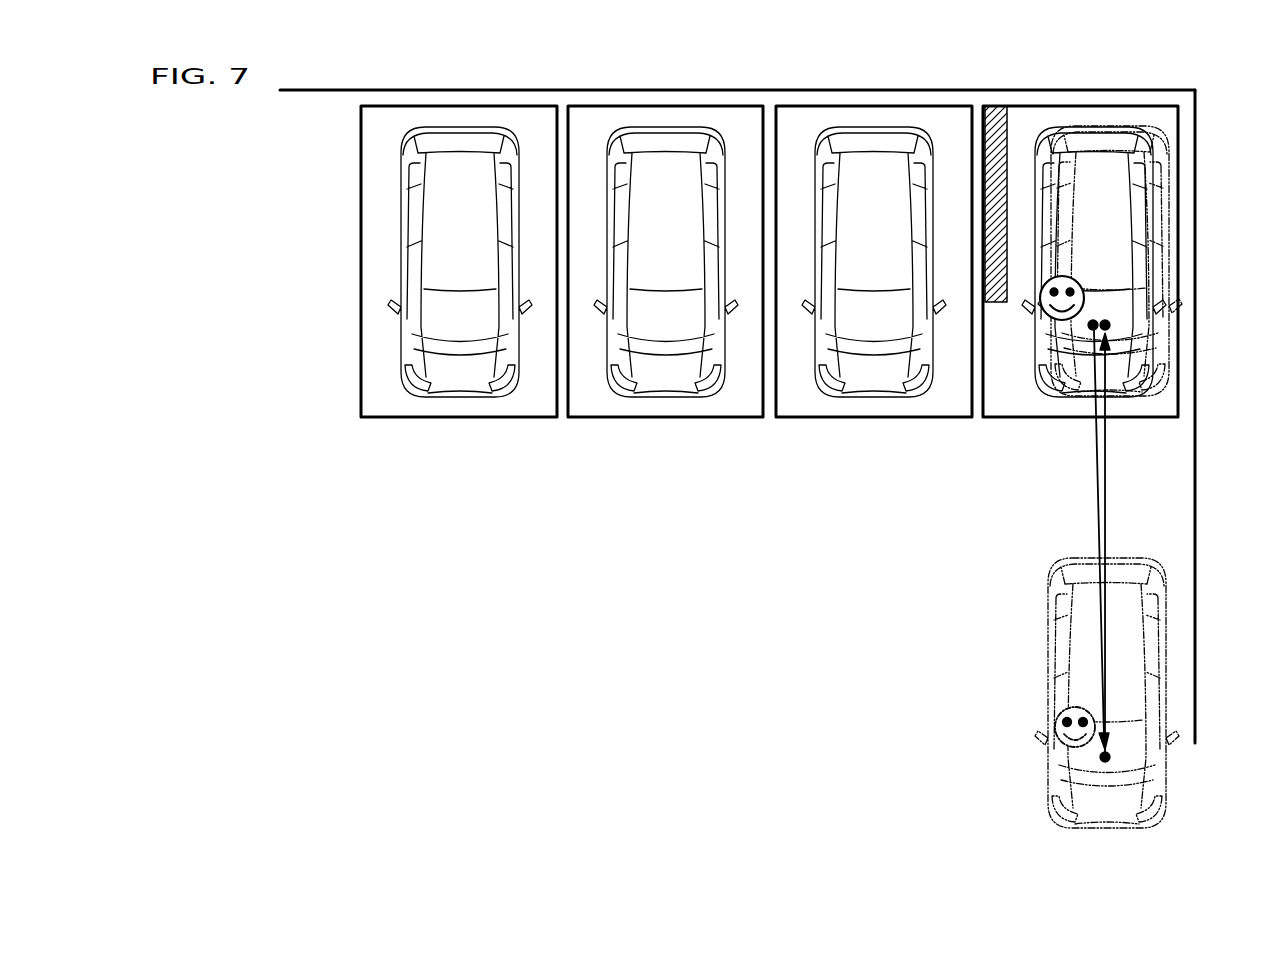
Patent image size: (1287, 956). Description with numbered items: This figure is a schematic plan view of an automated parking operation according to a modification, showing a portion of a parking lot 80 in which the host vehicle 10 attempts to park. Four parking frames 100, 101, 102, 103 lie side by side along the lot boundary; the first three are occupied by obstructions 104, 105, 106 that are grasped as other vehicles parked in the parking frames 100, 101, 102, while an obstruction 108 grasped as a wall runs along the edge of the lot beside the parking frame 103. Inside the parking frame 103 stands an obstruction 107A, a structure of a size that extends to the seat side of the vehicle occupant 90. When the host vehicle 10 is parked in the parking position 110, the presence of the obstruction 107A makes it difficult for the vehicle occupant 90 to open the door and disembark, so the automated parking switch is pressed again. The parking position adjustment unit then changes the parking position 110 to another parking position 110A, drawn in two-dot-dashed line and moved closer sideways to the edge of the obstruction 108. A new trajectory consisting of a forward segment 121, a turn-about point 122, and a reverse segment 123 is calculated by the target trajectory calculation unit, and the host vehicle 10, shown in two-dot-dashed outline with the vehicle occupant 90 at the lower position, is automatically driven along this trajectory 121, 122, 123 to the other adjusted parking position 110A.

The parking lot 80 is at (577, 89).
The obstruction (wall) 108 is at (1196, 542).
The parking frame 100 is at (428, 418).
The parking frame 101 is at (740, 418).
The parking frame 102 is at (855, 418).
The parking frame 103 is at (1112, 418).
The obstruction (other vehicle) 104 is at (456, 127).
The obstruction (other vehicle) 105 is at (665, 127).
The obstruction (other vehicle) 106 is at (872, 127).
The obstruction 107A is at (996, 106).
The host vehicle 10 is at (1150, 218).
The other parking position 110A is at (1170, 258).
The parking position 110 is at (1162, 331).
The vehicle occupant (driver) 90 is at (1058, 771).
The trajectory (forward) 121 is at (1097, 476).
The trajectory (turn-about) 122 is at (1108, 755).
The trajectory (reverse) 123 is at (1107, 498).